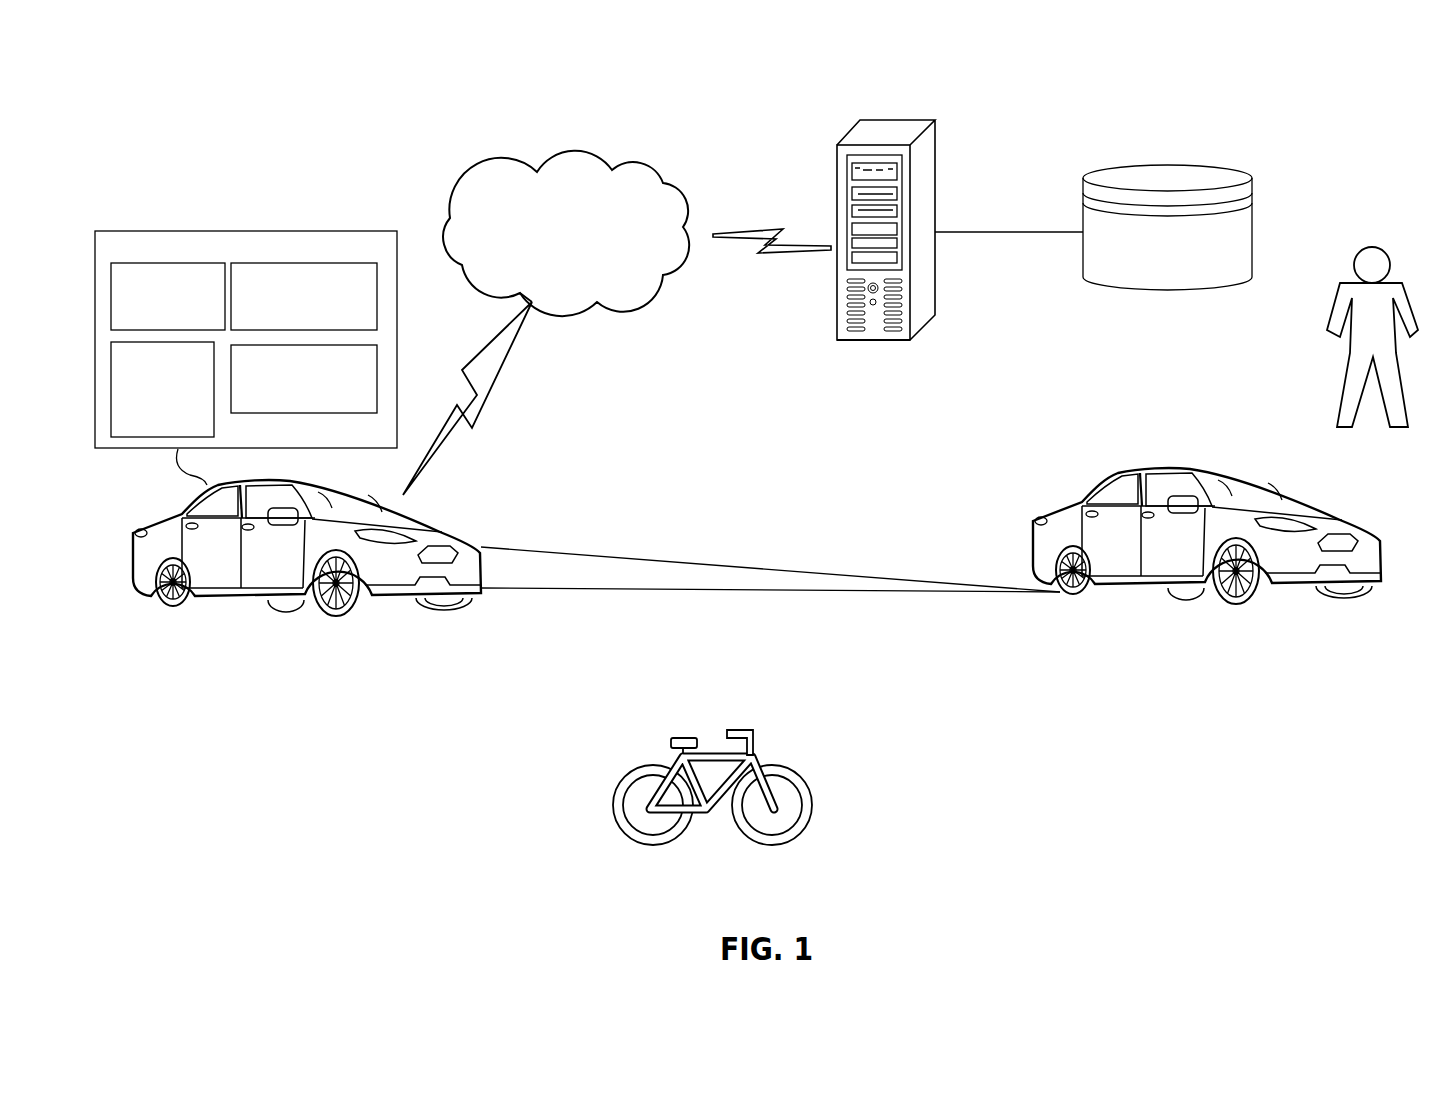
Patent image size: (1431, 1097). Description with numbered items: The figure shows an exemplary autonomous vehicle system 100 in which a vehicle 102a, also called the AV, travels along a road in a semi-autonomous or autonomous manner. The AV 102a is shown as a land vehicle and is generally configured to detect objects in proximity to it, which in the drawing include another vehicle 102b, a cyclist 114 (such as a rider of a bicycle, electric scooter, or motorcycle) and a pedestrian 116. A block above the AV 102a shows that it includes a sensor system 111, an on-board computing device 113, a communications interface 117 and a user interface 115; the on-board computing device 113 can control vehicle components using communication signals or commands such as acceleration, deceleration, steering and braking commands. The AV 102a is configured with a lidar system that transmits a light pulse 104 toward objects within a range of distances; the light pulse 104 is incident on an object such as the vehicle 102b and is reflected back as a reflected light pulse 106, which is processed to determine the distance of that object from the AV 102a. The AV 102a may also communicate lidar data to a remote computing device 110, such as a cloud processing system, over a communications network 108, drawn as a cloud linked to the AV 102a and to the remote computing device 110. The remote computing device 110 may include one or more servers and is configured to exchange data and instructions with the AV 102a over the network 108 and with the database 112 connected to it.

The autonomous vehicle system 100 is at (240, 167).
The vehicle 102a is at (240, 592).
The vehicle 102b is at (1140, 582).
The light pulse 104 is at (843, 572).
The reflected light pulse 106 is at (903, 595).
The communications network 108 is at (563, 150).
The remote computing device 110 is at (897, 130).
The sensor system 111 is at (168, 296).
The database 112 is at (1183, 167).
The on-board computing device 113 is at (162, 389).
The cyclist 114 is at (813, 803).
The user interface 115 is at (304, 379).
The pedestrian 116 is at (1368, 372).
The communications interface 117 is at (304, 296).